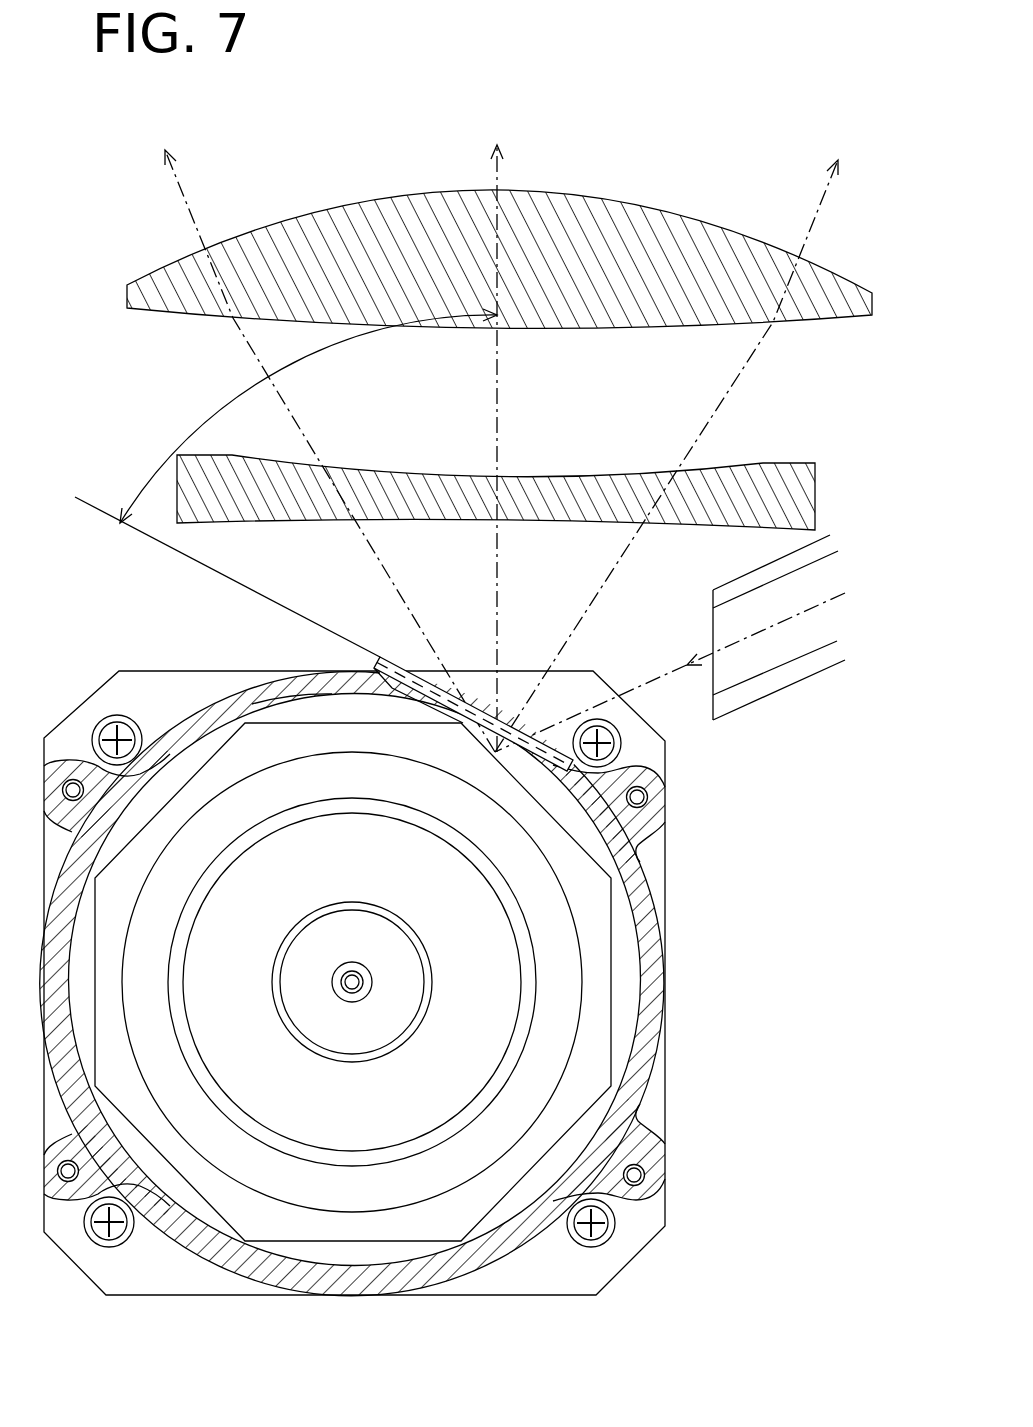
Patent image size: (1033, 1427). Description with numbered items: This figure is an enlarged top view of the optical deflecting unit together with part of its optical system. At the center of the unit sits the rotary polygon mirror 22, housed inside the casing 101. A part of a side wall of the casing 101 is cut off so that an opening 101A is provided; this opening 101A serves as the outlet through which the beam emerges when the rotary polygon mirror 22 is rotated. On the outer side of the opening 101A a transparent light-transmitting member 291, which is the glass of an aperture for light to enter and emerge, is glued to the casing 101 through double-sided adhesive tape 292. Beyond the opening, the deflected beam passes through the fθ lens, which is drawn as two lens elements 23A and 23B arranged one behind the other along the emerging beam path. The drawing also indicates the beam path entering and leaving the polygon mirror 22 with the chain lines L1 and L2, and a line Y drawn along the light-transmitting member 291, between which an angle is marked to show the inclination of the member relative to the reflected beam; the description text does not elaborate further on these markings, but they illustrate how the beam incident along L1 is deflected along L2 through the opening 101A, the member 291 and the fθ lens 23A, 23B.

The fθ lens 23B is at (690, 216).
The fθ lens 23A is at (790, 463).
The transparent light-transmitting member 291 is at (403, 660).
The double-sided adhesive tape 292 is at (378, 661).
The opening 101A is at (287, 701).
The casing 101 is at (660, 898).
The polygon mirror 22 is at (605, 978).
The incident optical axis L1 is at (672, 682).
The reflected optical axis L2 is at (500, 380).
The mirror surface line Y is at (86, 510).